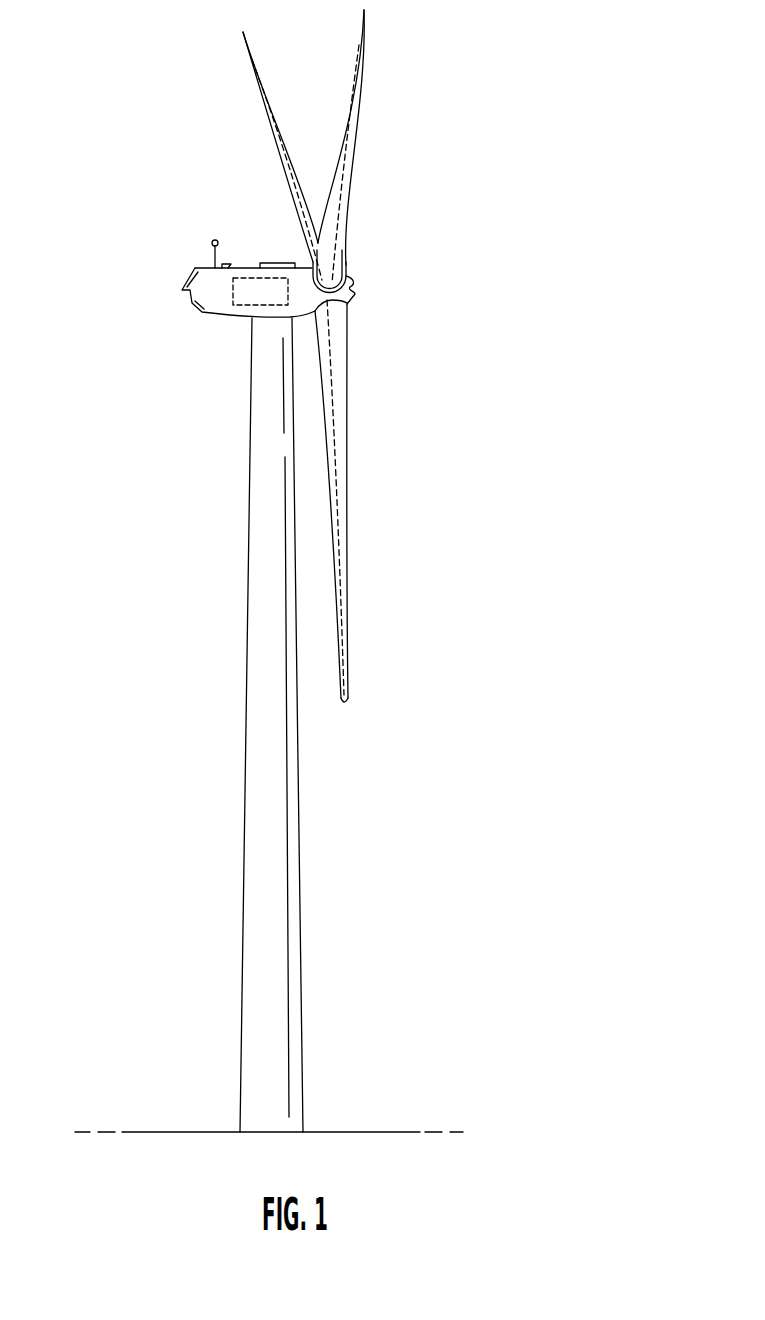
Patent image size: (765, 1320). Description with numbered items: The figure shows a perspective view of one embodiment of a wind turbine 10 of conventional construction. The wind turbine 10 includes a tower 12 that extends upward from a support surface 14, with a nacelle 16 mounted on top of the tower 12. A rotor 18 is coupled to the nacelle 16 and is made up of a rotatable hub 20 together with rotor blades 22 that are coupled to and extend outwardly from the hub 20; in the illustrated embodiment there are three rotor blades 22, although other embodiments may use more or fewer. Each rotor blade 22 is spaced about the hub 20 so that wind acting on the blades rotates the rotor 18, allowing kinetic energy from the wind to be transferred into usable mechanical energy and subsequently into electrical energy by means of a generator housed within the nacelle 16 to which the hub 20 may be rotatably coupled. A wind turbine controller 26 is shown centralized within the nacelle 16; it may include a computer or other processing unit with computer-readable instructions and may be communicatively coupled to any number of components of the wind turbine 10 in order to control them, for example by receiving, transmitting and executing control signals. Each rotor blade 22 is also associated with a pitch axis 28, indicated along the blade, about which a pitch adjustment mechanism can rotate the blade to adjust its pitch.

The wind turbine 10 is at (362, 571).
The tower 12 is at (275, 850).
The support surface 14 is at (210, 1132).
The nacelle 16 is at (248, 289).
The rotor 18 is at (330, 356).
The rotatable hub 20 is at (353, 291).
The rotor blade 22 is at (352, 83).
The wind turbine controller 26 is at (249, 278).
The pitch axis 28 is at (282, 147).